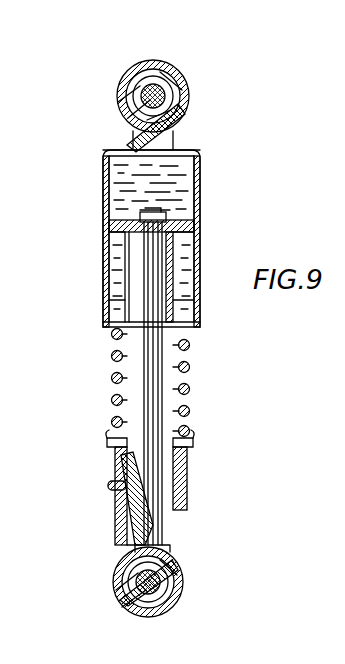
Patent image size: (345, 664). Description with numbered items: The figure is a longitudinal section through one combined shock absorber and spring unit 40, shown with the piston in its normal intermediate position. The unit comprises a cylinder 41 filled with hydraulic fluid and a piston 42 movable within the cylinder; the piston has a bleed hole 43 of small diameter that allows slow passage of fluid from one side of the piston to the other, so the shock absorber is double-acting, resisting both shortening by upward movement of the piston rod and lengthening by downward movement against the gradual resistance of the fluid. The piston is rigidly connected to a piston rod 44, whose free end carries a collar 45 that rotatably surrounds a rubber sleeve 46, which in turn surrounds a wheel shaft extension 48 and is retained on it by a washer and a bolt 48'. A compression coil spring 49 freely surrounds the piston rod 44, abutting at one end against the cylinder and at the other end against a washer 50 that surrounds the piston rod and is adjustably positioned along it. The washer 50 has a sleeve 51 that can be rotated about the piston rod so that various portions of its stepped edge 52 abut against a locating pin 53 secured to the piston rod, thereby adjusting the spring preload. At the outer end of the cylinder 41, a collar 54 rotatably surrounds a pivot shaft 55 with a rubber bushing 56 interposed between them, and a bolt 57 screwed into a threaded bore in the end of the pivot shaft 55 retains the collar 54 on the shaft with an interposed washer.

The combined shock absorber and spring unit 40 is at (98, 270).
The cylinder 41 is at (200, 190).
The piston 42 is at (200, 252).
The bleed hole 43 is at (105, 202).
The piston rod 44 is at (146, 352).
The collar 45 is at (177, 570).
The rubber sleeve 46 is at (183, 602).
The wheel shaft extension 48 is at (109, 583).
The bolt 48' is at (98, 597).
The compression coil spring 49 is at (190, 368).
The washer 50 is at (190, 435).
The sleeve 51 is at (188, 475).
The stepped edge 52 is at (110, 483).
The locating pin 53 is at (122, 500).
The collar 54 is at (186, 114).
The pivot shaft 55 is at (162, 92).
The rubber bushing 56 is at (150, 70).
The bolt 57 is at (120, 103).